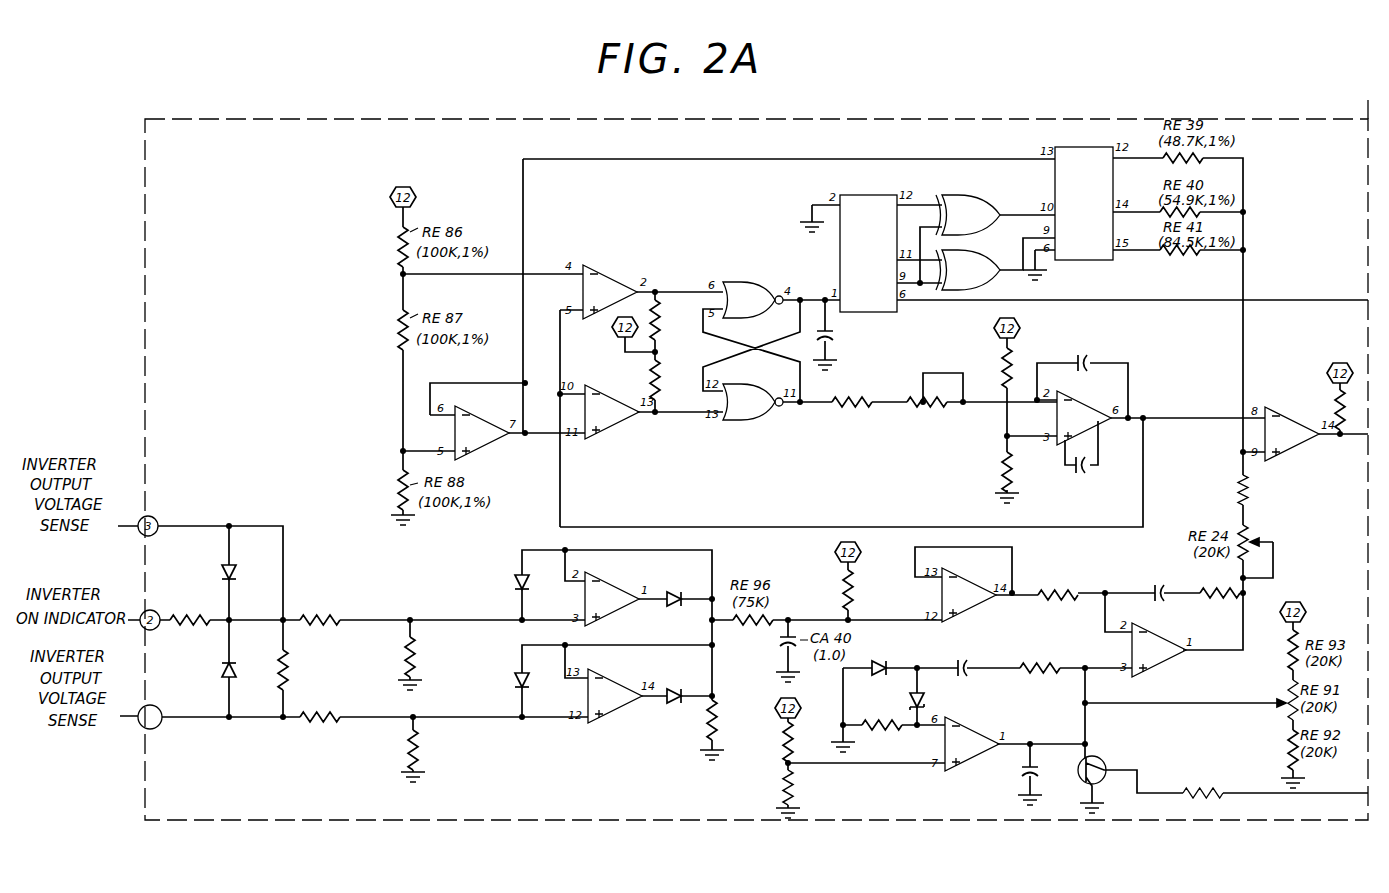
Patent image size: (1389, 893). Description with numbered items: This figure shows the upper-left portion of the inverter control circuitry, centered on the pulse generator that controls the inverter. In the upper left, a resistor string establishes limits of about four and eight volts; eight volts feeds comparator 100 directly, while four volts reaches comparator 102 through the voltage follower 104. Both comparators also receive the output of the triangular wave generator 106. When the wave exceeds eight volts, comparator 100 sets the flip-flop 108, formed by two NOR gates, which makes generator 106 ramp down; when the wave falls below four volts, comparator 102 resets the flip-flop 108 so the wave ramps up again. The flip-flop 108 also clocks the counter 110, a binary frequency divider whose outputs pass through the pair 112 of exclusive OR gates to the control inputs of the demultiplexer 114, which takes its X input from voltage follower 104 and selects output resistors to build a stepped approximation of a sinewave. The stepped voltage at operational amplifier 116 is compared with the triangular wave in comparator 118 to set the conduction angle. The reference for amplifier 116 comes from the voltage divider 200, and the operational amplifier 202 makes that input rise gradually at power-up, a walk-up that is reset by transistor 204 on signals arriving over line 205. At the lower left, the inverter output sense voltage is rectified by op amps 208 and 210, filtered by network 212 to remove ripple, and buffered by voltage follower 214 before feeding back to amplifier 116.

The comparator 100 is at (604, 265).
The comparator 102 is at (602, 386).
The voltage follower 104 is at (500, 436).
The triangular wave generator 106 is at (1085, 400).
The flip-flop 108 is at (741, 284).
The counter 110 is at (862, 193).
The pair of exclusive OR gates 112 is at (966, 195).
The demultiplexer 114 is at (1082, 147).
The operational amplifier 116 is at (1170, 632).
The comparator 118 is at (1285, 407).
The voltage divider 200 is at (1279, 688).
The operational amplifier 202 is at (975, 720).
The transistor 204 is at (1105, 755).
The line 205 is at (1166, 790).
The op amp 208 is at (615, 577).
The op amp 210 is at (615, 673).
The network 212 is at (792, 614).
The voltage follower 214 is at (962, 576).